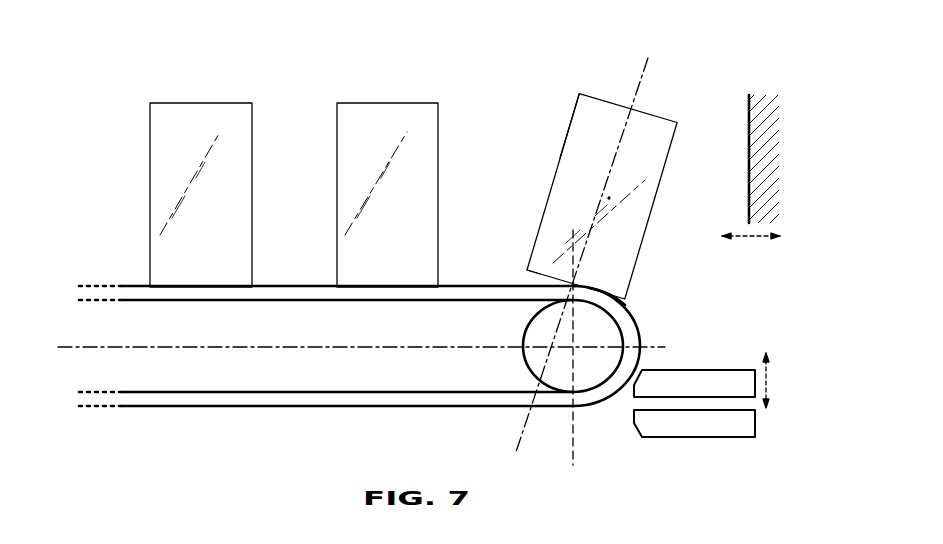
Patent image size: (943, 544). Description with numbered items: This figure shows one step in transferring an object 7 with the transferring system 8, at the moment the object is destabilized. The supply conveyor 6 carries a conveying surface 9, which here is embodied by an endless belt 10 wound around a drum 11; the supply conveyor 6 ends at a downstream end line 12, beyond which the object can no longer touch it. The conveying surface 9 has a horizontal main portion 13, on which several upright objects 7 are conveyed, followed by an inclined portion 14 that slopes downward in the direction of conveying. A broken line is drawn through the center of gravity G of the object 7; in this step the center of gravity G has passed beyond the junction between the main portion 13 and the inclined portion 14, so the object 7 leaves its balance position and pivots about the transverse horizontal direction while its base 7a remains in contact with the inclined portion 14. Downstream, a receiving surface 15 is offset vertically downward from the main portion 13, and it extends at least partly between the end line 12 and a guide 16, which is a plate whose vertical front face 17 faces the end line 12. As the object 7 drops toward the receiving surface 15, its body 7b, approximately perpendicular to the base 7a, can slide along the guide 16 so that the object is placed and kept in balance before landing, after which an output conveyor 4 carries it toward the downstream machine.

The output conveyor 4 is at (762, 422).
The supply conveyor 6 is at (312, 410).
The object 7 is at (208, 207).
The base of the object 7a is at (535, 276).
The body of the object 7b is at (566, 140).
The transferring system 8 is at (714, 73).
The conveying surface 9 is at (297, 278).
The endless belt 10 is at (265, 302).
The drum 11 is at (525, 363).
The downstream end line 12 is at (641, 345).
The main portion 13 is at (462, 286).
The inclined portion 14 is at (626, 301).
The receiving surface 15 is at (738, 370).
The guide 16 is at (760, 95).
The front face 17 is at (748, 136).
The center of gravity G is at (608, 199).